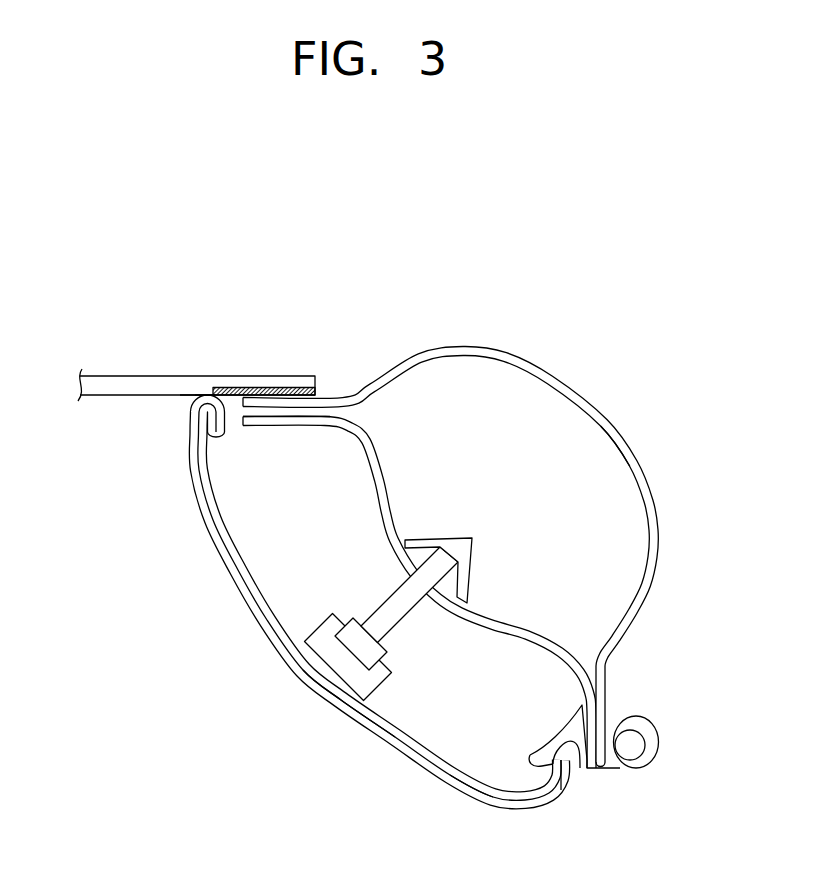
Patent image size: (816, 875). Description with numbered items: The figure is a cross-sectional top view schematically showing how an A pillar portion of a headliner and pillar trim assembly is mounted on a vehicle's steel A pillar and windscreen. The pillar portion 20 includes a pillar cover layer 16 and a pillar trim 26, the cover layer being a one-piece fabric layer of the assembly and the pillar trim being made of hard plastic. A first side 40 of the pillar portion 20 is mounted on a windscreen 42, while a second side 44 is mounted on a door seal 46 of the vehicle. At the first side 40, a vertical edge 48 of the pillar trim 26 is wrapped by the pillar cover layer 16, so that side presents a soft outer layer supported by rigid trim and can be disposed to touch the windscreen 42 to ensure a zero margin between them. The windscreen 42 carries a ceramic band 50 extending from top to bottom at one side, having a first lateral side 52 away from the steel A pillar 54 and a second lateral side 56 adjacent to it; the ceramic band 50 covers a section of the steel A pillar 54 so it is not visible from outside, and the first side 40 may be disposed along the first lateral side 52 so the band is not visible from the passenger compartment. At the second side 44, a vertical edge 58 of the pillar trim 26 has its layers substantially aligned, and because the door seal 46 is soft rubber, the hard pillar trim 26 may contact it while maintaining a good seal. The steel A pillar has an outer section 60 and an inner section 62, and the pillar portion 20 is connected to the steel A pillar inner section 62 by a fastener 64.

The pillar cover layer 16 is at (189, 453).
The pillar portion 20 is at (348, 716).
The pillar trim 26 is at (492, 796).
The first side 40 is at (193, 397).
The windscreen 42 is at (142, 385).
The second side 44 is at (570, 770).
The door seal 46 is at (652, 740).
The vertical edge 48 is at (197, 414).
The ceramic band 50 is at (262, 386).
The first lateral side 52 is at (203, 389).
The steel A pillar 54 is at (500, 347).
The second lateral side 56 is at (318, 390).
The vertical edge 58 is at (522, 769).
The steel A pillar outer section 60 is at (563, 388).
The steel A pillar inner section 62 is at (522, 630).
The fastener 64 is at (393, 609).